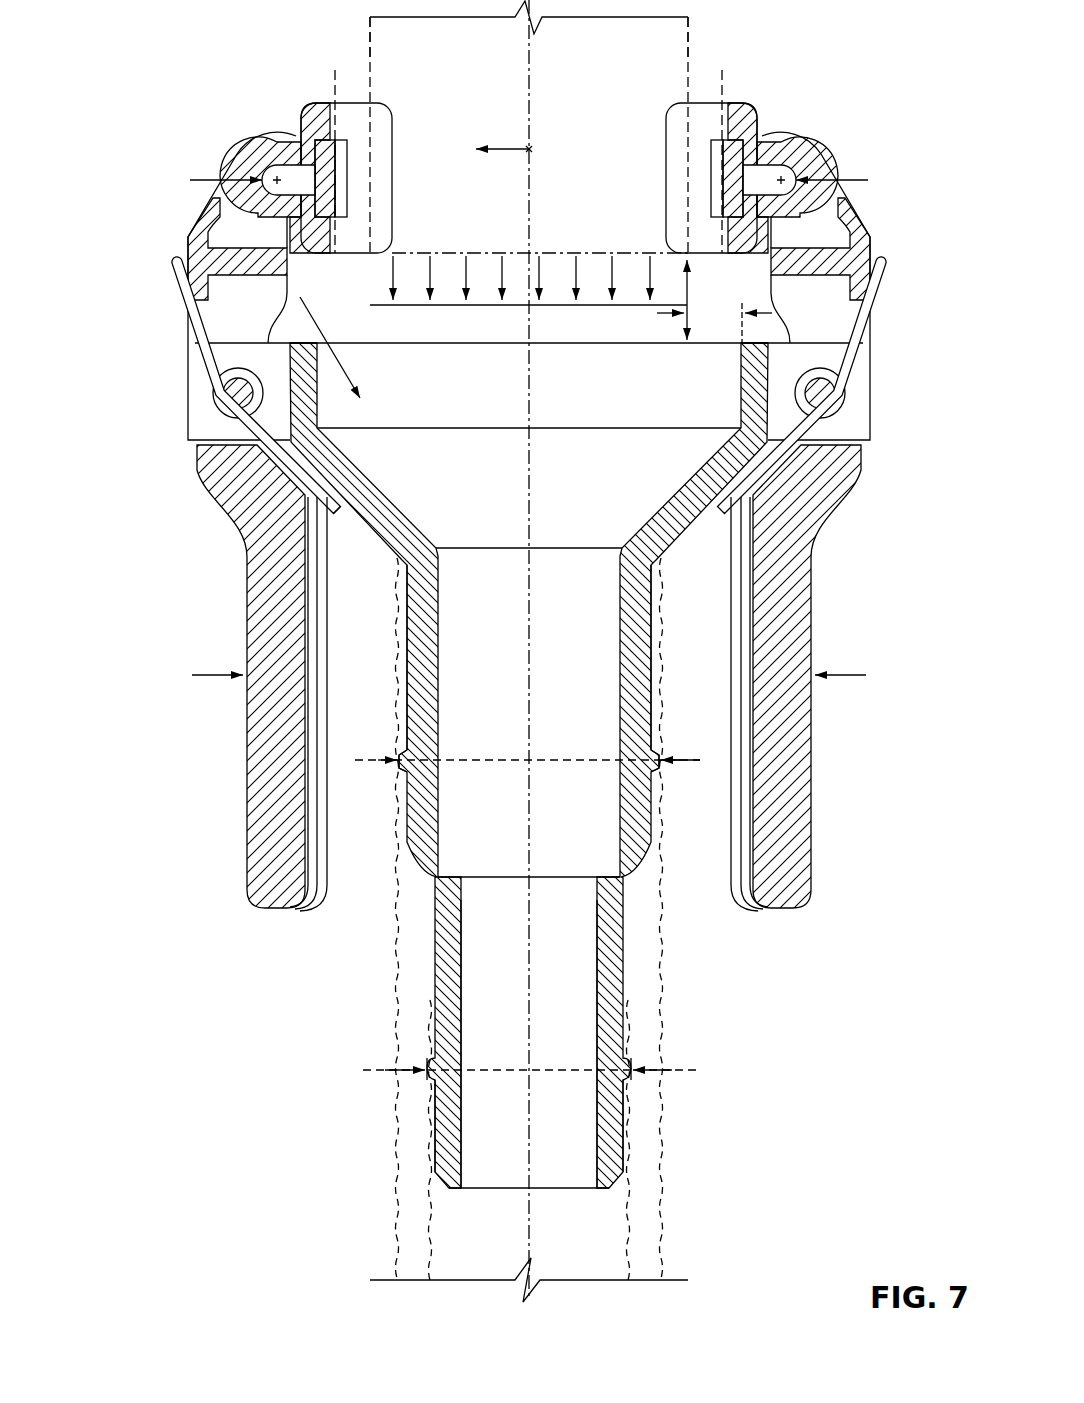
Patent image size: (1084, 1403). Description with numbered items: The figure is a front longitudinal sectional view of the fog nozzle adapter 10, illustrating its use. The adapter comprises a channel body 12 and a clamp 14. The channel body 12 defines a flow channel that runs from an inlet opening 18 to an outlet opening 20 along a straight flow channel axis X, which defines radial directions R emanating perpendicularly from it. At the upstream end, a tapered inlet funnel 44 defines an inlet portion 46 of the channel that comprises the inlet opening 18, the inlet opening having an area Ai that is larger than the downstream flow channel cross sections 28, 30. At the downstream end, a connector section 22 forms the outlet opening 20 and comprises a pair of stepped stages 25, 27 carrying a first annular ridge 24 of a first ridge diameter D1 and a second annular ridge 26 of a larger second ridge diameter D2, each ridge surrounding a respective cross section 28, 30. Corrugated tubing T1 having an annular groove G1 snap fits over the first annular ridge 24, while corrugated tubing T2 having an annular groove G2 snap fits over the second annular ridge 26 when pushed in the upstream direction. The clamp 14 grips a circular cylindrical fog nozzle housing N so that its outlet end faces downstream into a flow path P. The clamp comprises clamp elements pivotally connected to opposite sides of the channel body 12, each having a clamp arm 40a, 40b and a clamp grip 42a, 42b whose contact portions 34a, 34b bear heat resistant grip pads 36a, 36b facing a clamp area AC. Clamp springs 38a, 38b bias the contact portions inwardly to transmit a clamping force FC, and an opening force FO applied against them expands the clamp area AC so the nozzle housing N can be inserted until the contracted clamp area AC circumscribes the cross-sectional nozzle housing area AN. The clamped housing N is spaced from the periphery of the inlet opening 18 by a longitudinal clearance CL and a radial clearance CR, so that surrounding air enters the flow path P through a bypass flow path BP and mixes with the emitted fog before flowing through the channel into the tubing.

The fog nozzle adapter 10 is at (122, 40).
The channel body 12 is at (529, 811).
The clamp 14 is at (504, 457).
The inlet opening 18 is at (413, 343).
The outlet opening 20 is at (556, 1188).
The connector section 22 is at (644, 870).
The first annular ridge 24 is at (462, 1070).
The stepped stage 25 is at (626, 1033).
The second annular ridge 26 is at (430, 748).
The stepped stage 27 is at (662, 708).
The flow channel cross section 28 is at (560, 1075).
The flow channel cross section 30 is at (556, 758).
The contact portion 34a is at (370, 147).
The contact portion 34b is at (686, 190).
The grip pad 36a is at (345, 140).
The grip pad 36b is at (713, 140).
The first clamp spring 38a is at (176, 290).
The second clamp spring 38b is at (864, 358).
The clamp arm 40a is at (186, 243).
The clamp arm 40b is at (874, 262).
The clamp grip 42a is at (357, 160).
The clamp grip 42b is at (697, 163).
The inlet funnel 44 is at (338, 515).
The inlet portion 46 is at (475, 530).
The flow channel axis X is at (527, 110).
The fog nozzle housing N is at (364, 60).
The cross-sectional nozzle housing area AN is at (364, 30).
The clamp area AC is at (331, 84).
The radial direction R is at (508, 150).
The flow path P is at (453, 307).
The longitudinal clearance CL is at (684, 272).
The radial clearance CR is at (714, 323).
The bypass flow path BP is at (355, 378).
The inlet opening area Ai is at (350, 340).
The clamping force FC is at (521, 182).
The opening force FO is at (526, 678).
The corrugated tubing T1 is at (632, 1228).
The corrugated tubing T2 is at (668, 612).
The annular groove G1 is at (632, 1065).
The annular groove G2 is at (393, 723).
The first ridge diameter D1 is at (380, 1070).
The second ridge diameter D2 is at (697, 762).